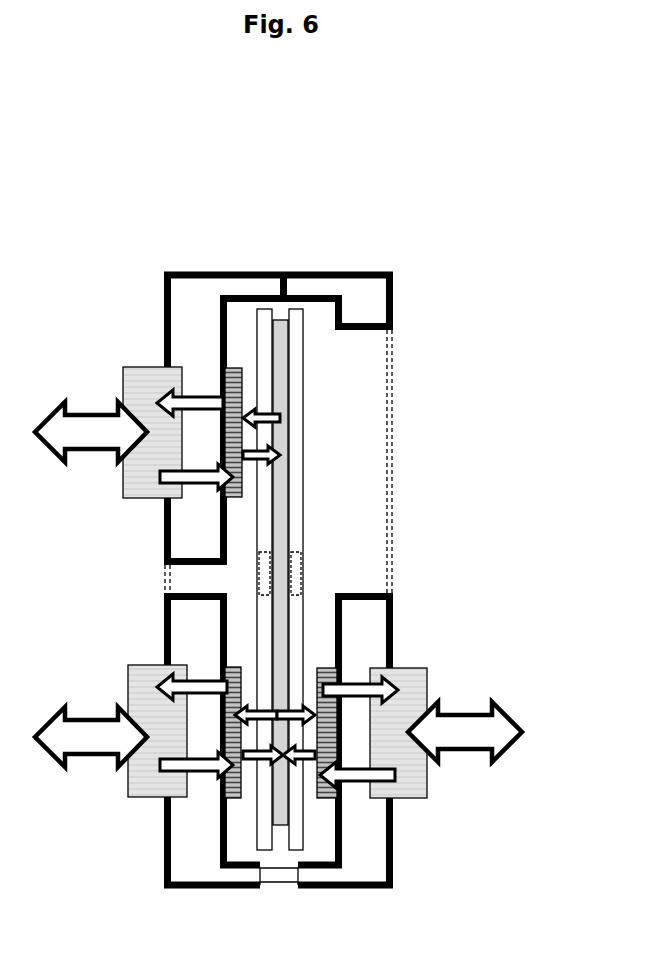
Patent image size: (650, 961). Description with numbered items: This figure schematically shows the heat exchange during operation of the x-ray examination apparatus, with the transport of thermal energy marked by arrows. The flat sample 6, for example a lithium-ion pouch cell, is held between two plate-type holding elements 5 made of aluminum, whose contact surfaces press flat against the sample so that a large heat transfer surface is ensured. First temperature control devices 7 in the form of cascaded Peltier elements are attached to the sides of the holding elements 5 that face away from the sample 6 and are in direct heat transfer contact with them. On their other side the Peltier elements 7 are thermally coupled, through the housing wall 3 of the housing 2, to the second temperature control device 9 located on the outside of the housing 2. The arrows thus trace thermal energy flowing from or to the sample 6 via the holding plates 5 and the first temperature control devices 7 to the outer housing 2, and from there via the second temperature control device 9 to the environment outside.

The housing 2 is at (197, 300).
The housing wall 3 is at (164, 302).
The plate-type holding element 5 is at (262, 308).
The flat sample 6 is at (282, 318).
The first temperature control device 7 is at (224, 375).
The second temperature control device 9 is at (140, 478).